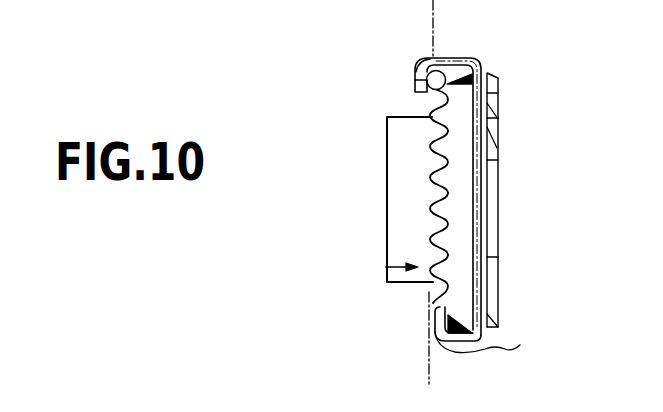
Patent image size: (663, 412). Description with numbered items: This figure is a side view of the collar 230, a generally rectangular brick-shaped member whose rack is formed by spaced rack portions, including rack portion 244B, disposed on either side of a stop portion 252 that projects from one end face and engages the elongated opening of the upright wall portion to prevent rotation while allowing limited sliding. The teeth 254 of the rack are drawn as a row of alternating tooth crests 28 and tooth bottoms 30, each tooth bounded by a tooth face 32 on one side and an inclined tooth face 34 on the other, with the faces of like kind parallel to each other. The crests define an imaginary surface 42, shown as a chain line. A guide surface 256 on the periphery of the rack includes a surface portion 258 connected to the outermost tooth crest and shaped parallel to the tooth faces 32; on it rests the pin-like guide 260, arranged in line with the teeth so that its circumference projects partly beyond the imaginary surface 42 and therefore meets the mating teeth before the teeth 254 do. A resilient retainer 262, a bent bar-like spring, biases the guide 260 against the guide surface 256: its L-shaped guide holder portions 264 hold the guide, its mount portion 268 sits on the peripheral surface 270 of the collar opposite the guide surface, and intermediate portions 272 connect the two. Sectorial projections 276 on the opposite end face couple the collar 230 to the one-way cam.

The guide holder portion 264 is at (415, 56).
The guide 260 is at (415, 79).
The tooth face 32 is at (430, 113).
The tooth face 34 is at (431, 141).
The stop portion 252 is at (387, 188).
The tooth bottom 30 is at (430, 208).
The tooth crest 28 is at (430, 234).
The teeth 254 is at (394, 273).
The rack portion 244B is at (416, 297).
The guide surface 256 is at (463, 58).
The surface portion 258 is at (445, 85).
The resilient retainer 262 is at (498, 114).
The collar 230 is at (498, 176).
The intermediate portion 272 is at (497, 212).
The sectorial projection 276 is at (497, 262).
The mount portion 268 is at (483, 305).
The peripheral surface 270 is at (520, 345).
The imaginary surface 42 is at (429, 370).